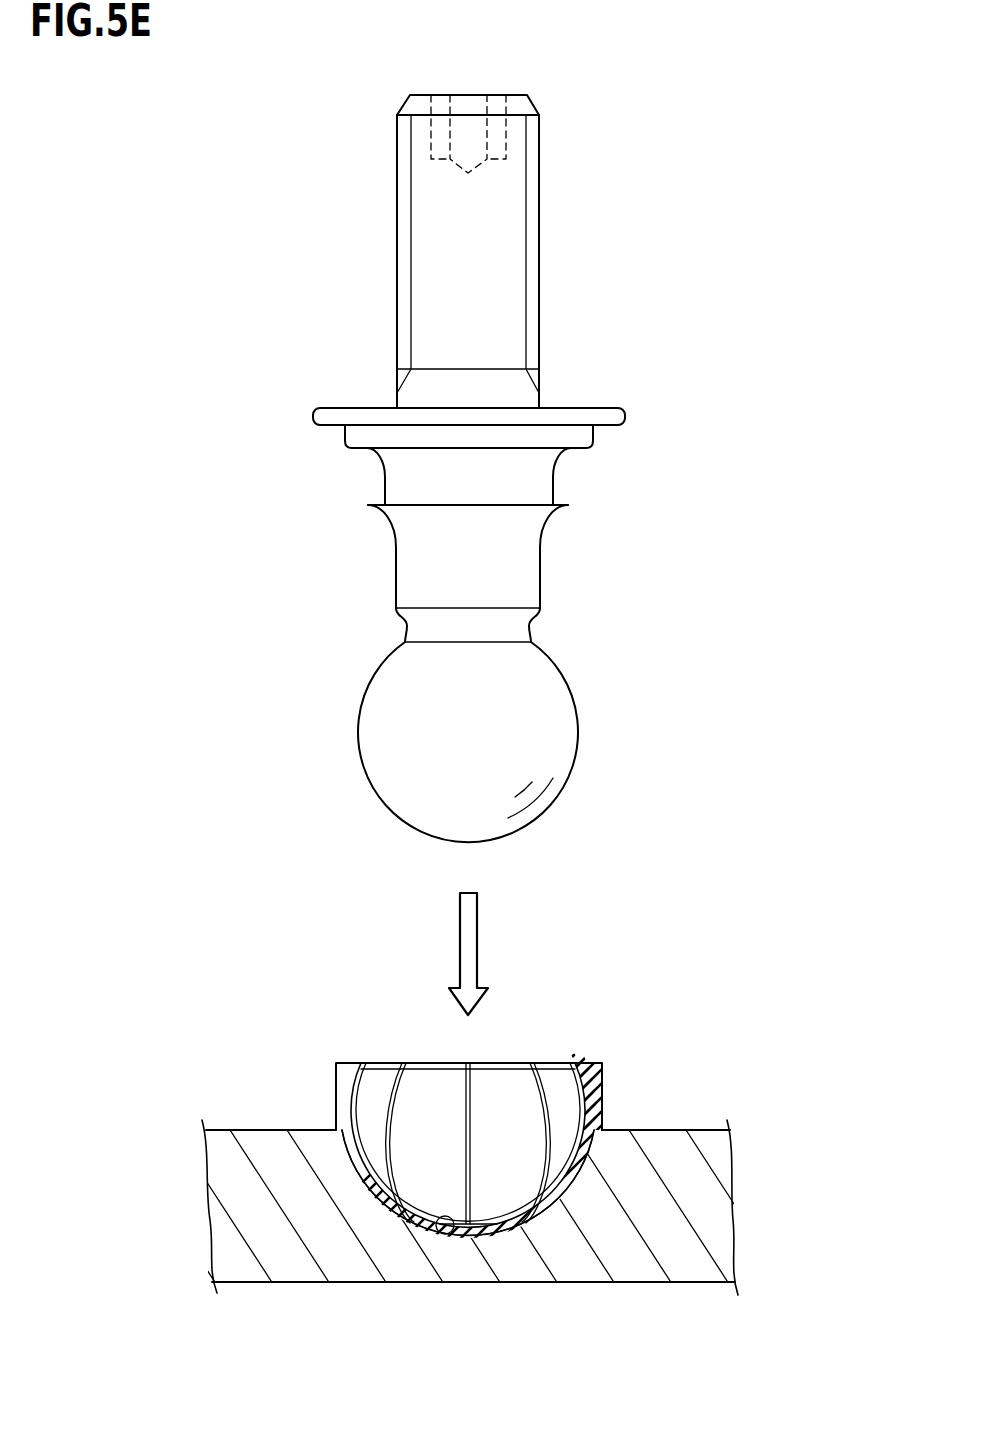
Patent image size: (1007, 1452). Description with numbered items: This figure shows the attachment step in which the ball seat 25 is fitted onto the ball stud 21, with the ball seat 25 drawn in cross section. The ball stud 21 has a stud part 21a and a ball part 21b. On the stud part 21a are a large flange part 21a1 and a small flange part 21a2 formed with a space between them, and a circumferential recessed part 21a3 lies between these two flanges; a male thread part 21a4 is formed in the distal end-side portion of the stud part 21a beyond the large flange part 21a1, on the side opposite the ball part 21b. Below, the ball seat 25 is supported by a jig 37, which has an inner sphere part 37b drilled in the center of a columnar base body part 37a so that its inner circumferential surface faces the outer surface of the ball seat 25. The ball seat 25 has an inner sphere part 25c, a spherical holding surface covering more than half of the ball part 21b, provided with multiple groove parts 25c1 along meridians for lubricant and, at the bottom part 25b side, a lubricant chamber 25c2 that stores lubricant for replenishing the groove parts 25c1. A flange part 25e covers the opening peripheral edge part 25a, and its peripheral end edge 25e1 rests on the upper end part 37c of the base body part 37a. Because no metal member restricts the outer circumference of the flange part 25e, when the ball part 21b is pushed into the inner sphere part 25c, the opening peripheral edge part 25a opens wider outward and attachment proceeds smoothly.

The ball stud 21 is at (192, 710).
The stud part 21a is at (270, 95).
The ball part 21b is at (405, 733).
The large flange part 21a1 is at (620, 412).
The small flange part 21a2 is at (567, 505).
The circumferential recessed part 21a3 is at (553, 485).
The male thread part 21a4 is at (539, 236).
The ball seat 25 is at (331, 1060).
The opening peripheral edge part 25a is at (592, 1063).
The bottom part 25b is at (452, 1230).
The inner sphere part 25c is at (558, 1165).
The groove parts 25c1 is at (410, 1160).
The lubricant chamber 25c2 is at (467, 1150).
The flange part 25e is at (336, 1082).
The peripheral end edge 25e1 is at (345, 1132).
The jig 37 is at (720, 1203).
The base body part 37a is at (707, 1248).
The inner sphere part 37b is at (565, 1165).
The upper end part 37c is at (670, 1130).